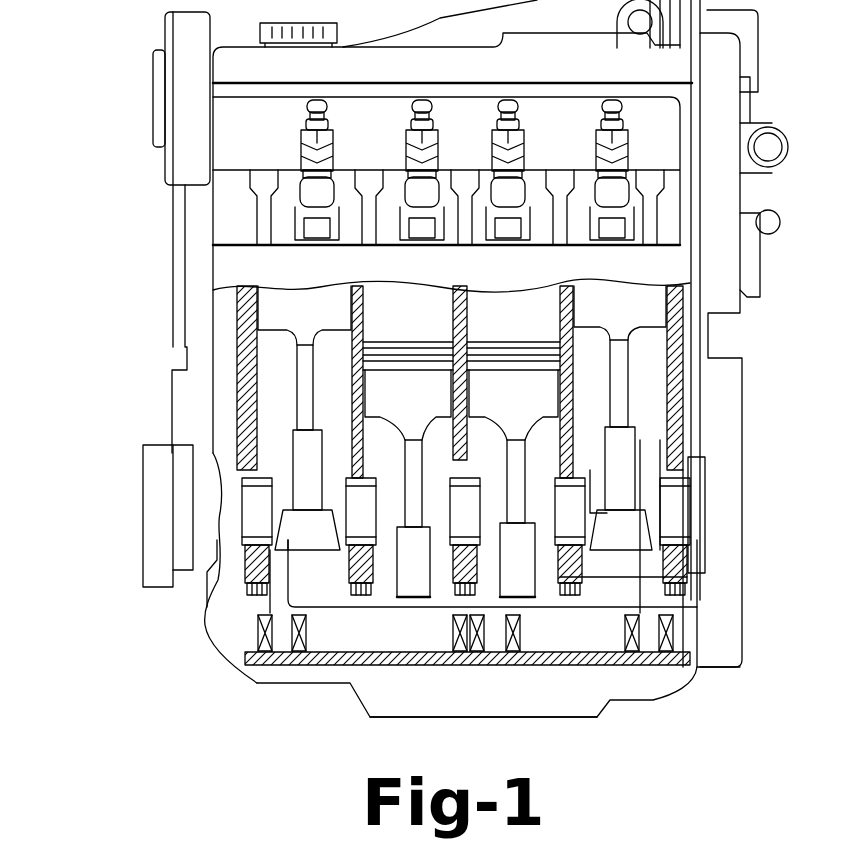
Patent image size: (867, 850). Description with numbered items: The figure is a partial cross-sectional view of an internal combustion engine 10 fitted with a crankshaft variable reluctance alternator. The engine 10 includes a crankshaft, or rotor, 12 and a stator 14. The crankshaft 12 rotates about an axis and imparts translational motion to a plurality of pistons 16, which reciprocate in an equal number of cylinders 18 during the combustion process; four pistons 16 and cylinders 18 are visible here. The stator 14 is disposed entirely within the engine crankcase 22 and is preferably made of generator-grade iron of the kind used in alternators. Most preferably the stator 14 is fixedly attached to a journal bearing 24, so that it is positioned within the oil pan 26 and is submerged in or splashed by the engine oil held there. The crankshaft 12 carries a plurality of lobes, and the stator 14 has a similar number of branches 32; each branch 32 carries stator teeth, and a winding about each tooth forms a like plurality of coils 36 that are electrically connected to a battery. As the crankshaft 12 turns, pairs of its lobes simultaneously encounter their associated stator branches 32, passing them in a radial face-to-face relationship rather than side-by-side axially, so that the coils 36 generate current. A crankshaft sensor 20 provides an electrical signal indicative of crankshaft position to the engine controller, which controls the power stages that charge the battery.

The internal combustion engine 10 is at (140, 158).
The crankshaft 12 is at (282, 592).
The stator 14 is at (352, 672).
The pistons 16 is at (306, 318).
The cylinders 18 is at (418, 323).
The crankshaft sensor 20 is at (127, 587).
The engine crankcase 22 is at (258, 660).
The journal bearing 24 is at (575, 505).
The oil pan 26 is at (418, 712).
The stator branches 32 is at (397, 603).
The coils 36 is at (258, 660).